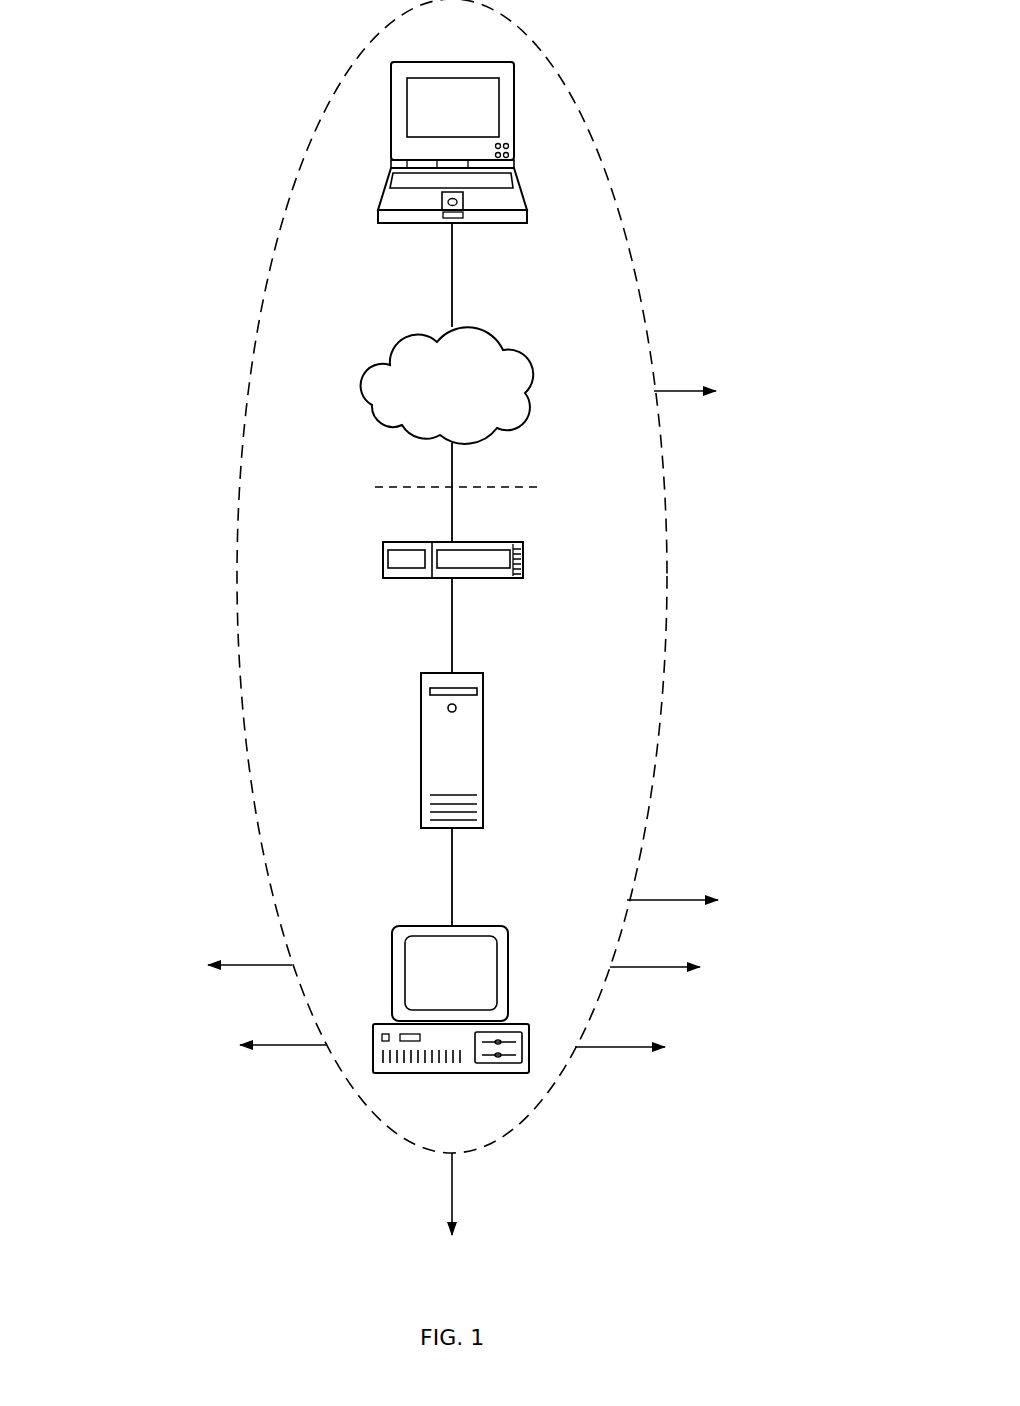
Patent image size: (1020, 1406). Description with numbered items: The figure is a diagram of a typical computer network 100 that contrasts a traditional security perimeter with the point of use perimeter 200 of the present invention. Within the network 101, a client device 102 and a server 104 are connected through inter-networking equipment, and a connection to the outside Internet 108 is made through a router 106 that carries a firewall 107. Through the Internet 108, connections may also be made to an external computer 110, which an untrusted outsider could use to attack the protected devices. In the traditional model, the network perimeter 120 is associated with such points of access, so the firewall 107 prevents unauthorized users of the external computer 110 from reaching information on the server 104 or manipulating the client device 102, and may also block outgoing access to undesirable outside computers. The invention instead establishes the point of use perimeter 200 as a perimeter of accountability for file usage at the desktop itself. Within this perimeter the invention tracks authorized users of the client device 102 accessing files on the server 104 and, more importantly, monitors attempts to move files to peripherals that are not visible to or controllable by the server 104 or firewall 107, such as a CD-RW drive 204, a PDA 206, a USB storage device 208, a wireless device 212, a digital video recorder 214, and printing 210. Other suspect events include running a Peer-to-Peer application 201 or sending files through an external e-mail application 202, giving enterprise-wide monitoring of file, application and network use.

The computer network 100 is at (168, 26).
The network 101 is at (614, 658).
The client device 102 is at (478, 926).
The server 104 is at (420, 733).
The router 106 is at (493, 542).
The firewall 107 is at (396, 559).
The Internet 108 is at (475, 396).
The external computer 110 is at (391, 127).
The network perimeter 120 is at (415, 487).
The point of use perimeter 200 is at (273, 895).
The Peer-to-Peer application 201 is at (812, 396).
The e-mail application 202 is at (835, 416).
The CD-RW drive 204 is at (842, 912).
The Personal Digital Assistant 206 is at (800, 978).
The USB storage device 208 is at (885, 1058).
The printing channel 210 is at (472, 1286).
The wireless device 212 is at (232, 1056).
The digital video recorder 214 is at (197, 976).